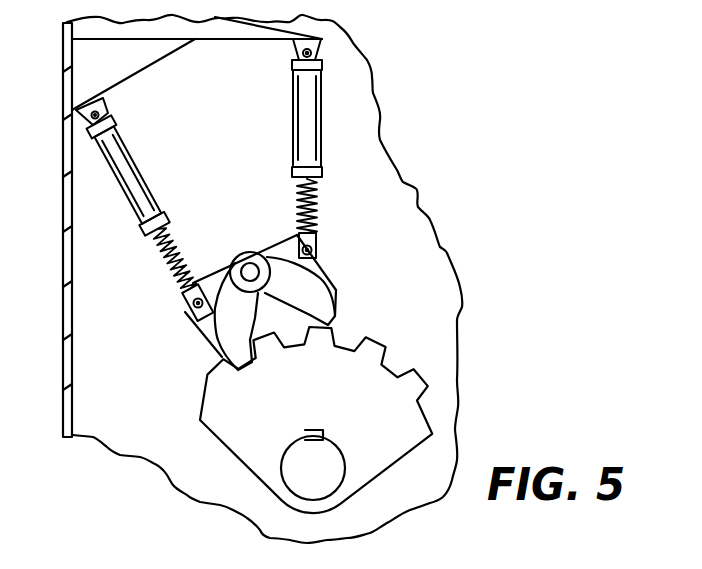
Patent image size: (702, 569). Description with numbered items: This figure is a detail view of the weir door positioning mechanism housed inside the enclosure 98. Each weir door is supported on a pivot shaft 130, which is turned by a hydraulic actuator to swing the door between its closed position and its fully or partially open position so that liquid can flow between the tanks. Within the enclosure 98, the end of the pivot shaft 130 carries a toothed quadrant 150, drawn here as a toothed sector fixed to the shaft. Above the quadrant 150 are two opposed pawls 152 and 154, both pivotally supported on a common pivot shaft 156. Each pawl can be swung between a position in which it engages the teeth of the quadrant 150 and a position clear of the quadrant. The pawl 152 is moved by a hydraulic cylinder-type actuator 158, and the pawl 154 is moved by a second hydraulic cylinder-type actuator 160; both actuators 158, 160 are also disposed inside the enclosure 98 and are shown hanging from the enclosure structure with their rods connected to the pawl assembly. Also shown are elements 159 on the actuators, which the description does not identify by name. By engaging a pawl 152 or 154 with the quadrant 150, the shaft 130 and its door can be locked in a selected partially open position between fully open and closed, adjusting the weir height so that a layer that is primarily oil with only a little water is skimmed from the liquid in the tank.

The enclosure 98 is at (402, 182).
The pivot shaft 130 is at (282, 465).
The toothed quadrant 150 is at (398, 459).
The pawl 152 is at (213, 331).
The pawl 154 is at (336, 298).
The pivot shaft 156 is at (254, 275).
The hydraulic cylinder-type actuator 158 is at (120, 186).
The spring 159 is at (318, 207).
The hydraulic cylinder-type actuator 160 is at (295, 110).